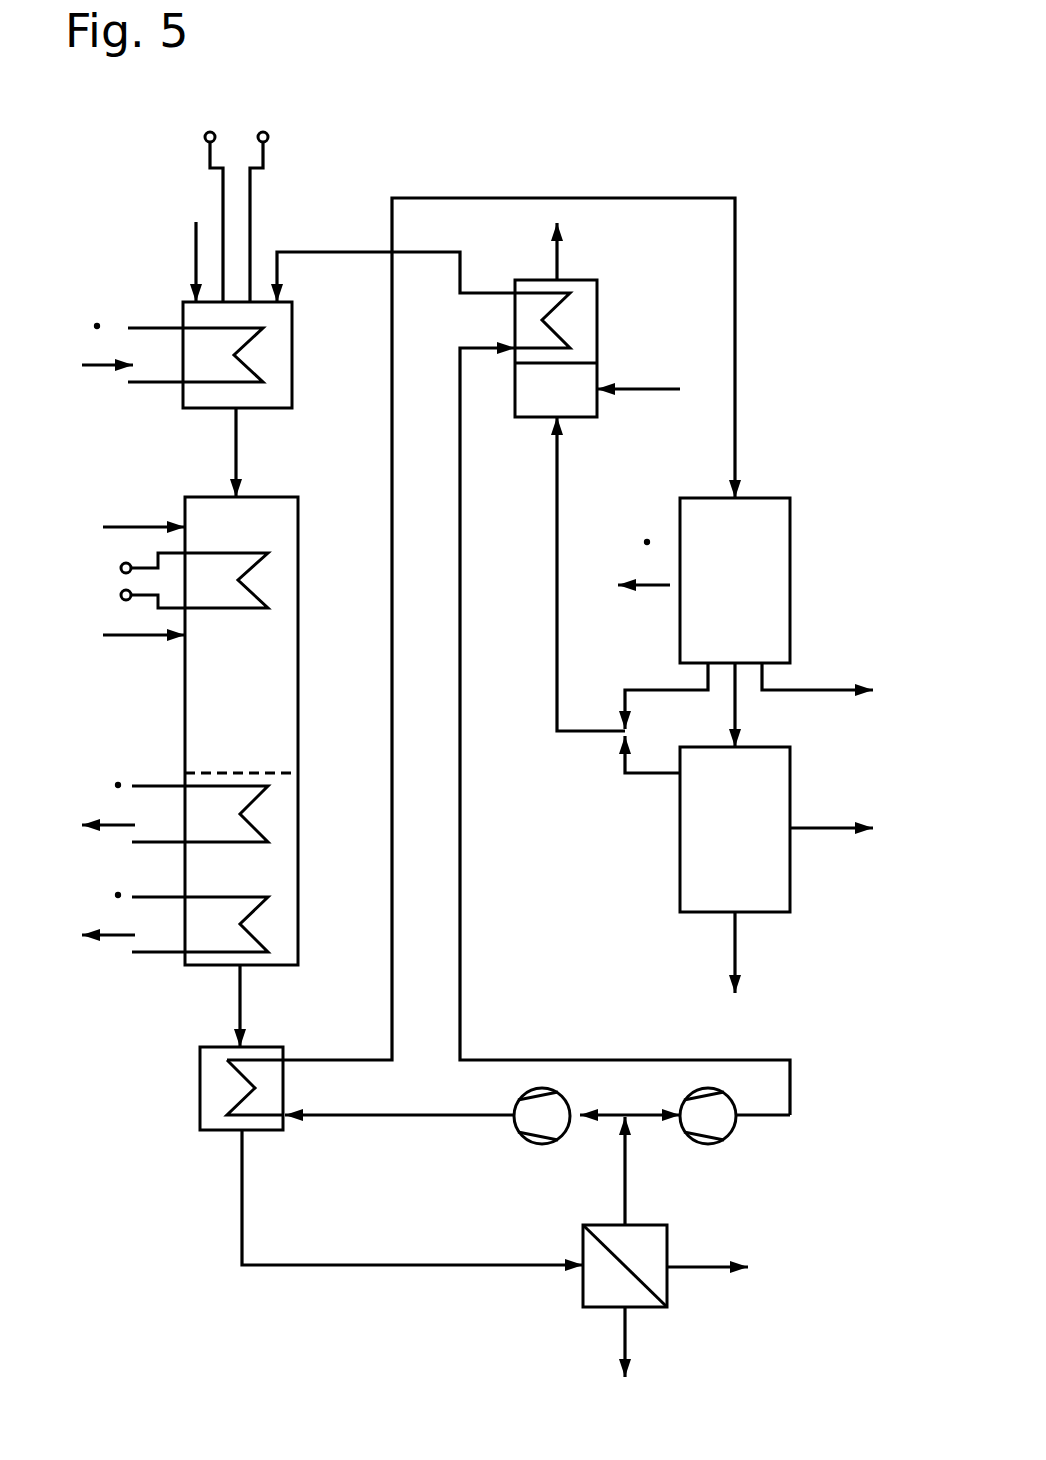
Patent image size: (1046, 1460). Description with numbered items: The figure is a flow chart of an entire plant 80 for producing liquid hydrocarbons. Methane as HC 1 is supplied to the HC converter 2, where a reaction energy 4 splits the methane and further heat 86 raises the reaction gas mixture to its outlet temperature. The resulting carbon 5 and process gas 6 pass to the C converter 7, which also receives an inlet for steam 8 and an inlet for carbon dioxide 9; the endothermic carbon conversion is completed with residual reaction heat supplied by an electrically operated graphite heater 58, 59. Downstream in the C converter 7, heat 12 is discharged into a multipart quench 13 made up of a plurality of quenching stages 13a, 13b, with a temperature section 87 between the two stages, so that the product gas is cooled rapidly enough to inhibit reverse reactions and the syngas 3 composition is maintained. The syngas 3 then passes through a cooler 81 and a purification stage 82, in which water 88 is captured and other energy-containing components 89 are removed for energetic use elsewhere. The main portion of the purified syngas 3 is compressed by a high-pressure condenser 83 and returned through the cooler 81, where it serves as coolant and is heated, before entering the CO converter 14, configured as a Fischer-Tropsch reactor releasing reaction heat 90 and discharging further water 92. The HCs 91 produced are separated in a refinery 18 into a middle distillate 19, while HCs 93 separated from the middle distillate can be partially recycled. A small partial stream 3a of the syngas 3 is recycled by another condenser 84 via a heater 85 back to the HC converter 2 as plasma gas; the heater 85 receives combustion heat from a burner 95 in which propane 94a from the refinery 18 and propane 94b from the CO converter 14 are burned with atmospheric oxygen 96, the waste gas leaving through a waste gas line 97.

The HC 1 is at (196, 242).
The HC converter 2 is at (292, 378).
The syngas 3 is at (392, 590).
The partial stream 3a is at (342, 252).
The reaction energy 4 is at (253, 212).
The carbon 5 is at (220, 452).
The process gas 6 is at (236, 445).
The C converter 7 is at (298, 718).
The steam 8 is at (110, 633).
The carbon dioxide 9 is at (113, 525).
The heat 12 is at (118, 830).
The quench 13 is at (298, 828).
The quenching stage 13a is at (158, 784).
The quenching stage 13b is at (150, 953).
The CO converter 14 is at (790, 578).
The refinery 18 is at (678, 865).
The middle distillate 19 is at (820, 830).
The graphite heater 58 is at (179, 553).
The graphite heater 59 is at (200, 553).
The plant 80 is at (730, 124).
The cooler 81 is at (200, 1080).
The purification stage 82 is at (583, 1278).
The high-pressure condenser 83 is at (545, 1145).
The condenser 84 is at (737, 1126).
The heater 85 is at (598, 308).
The heat 86 is at (97, 372).
The temperature section 87 is at (242, 863).
The water 88 is at (695, 1270).
The energy-containing components 89 is at (623, 1330).
The reaction heat 90 is at (655, 590).
The HCs 91 is at (737, 700).
The water 92 is at (820, 690).
The HCs 93 is at (737, 940).
The propane 94a is at (657, 775).
The propane 94b is at (657, 690).
The burner 95 is at (577, 418).
The atmospheric oxygen 96 is at (648, 390).
The waste gas line 97 is at (560, 262).